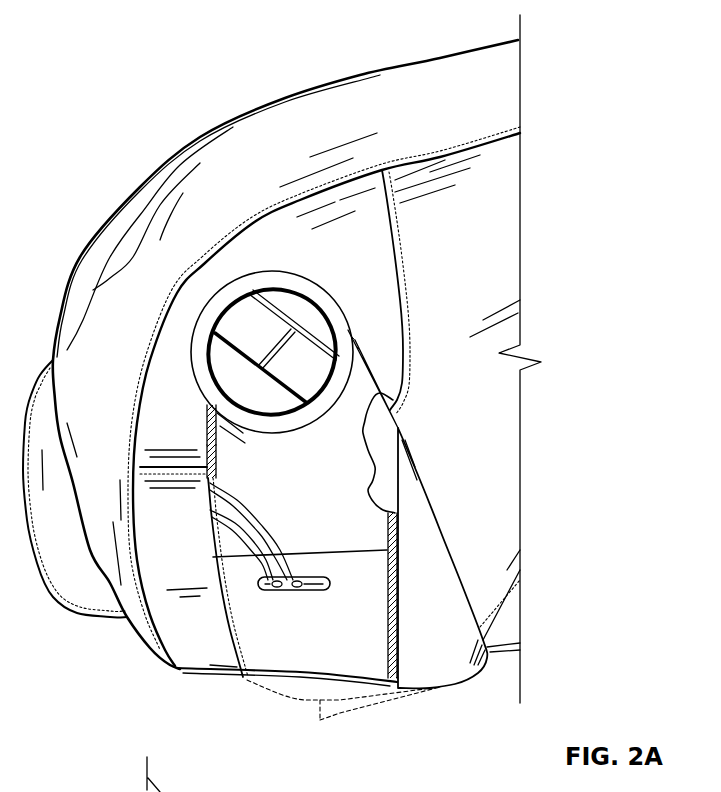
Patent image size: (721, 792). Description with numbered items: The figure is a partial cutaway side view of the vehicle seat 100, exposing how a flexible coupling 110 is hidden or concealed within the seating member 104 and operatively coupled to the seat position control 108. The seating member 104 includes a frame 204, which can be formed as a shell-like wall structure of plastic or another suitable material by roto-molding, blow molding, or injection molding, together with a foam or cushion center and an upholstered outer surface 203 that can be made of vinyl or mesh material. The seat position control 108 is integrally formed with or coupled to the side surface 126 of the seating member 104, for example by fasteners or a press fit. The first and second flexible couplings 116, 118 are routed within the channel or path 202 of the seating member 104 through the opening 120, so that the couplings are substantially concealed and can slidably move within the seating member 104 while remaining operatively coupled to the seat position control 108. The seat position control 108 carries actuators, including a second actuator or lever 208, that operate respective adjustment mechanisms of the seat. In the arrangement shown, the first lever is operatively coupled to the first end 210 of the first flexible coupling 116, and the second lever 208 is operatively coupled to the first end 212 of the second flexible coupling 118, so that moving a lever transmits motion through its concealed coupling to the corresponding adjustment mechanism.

The vehicle seat 100 is at (103, 68).
The seating member 104 is at (380, 68).
The side surface 126 is at (482, 256).
The seat position control 108 is at (296, 318).
The second actuator or lever 208 is at (247, 316).
The first end of the second flexible coupling 212 is at (214, 418).
The first end of the first flexible coupling 210 is at (222, 428).
The flexible coupling 110 is at (270, 504).
The first flexible coupling 116 is at (287, 541).
The second flexible coupling 118 is at (237, 540).
The opening 120 is at (311, 573).
The channel or path 202 is at (307, 631).
The frame 204 is at (388, 630).
The upholstered outer surface 203 is at (437, 672).